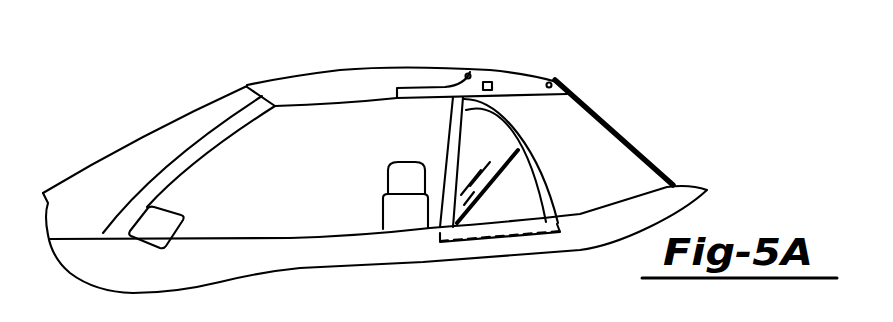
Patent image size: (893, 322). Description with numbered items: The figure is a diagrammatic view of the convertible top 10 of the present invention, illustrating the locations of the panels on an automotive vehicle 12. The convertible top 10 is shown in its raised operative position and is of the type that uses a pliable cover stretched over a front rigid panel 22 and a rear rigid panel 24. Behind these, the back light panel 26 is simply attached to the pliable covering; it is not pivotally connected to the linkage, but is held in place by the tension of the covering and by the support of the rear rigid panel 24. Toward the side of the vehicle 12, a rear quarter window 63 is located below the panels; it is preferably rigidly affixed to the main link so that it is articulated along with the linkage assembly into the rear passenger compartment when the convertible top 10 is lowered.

The convertible top 10 is at (627, 92).
The automotive vehicle 12 is at (147, 86).
The front rigid panel 22 is at (367, 83).
The rear rigid panel 24 is at (508, 80).
The back light panel 26 is at (637, 148).
The rear quarter window 63 is at (510, 203).